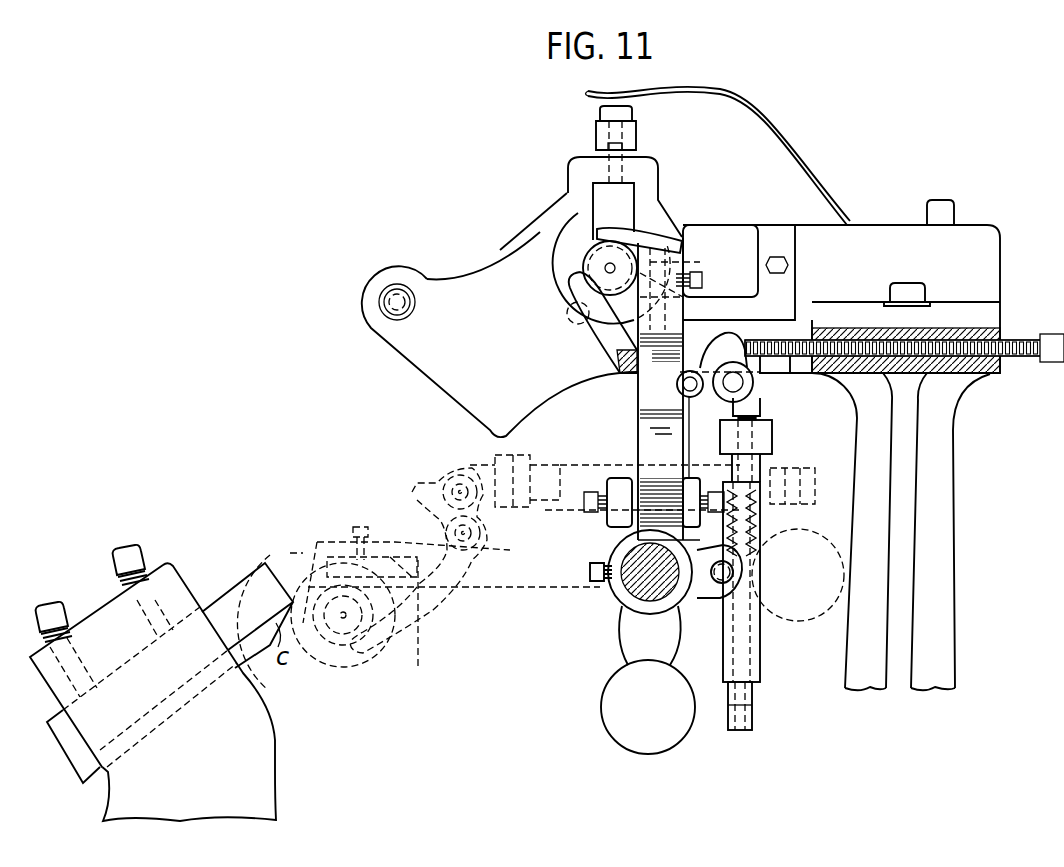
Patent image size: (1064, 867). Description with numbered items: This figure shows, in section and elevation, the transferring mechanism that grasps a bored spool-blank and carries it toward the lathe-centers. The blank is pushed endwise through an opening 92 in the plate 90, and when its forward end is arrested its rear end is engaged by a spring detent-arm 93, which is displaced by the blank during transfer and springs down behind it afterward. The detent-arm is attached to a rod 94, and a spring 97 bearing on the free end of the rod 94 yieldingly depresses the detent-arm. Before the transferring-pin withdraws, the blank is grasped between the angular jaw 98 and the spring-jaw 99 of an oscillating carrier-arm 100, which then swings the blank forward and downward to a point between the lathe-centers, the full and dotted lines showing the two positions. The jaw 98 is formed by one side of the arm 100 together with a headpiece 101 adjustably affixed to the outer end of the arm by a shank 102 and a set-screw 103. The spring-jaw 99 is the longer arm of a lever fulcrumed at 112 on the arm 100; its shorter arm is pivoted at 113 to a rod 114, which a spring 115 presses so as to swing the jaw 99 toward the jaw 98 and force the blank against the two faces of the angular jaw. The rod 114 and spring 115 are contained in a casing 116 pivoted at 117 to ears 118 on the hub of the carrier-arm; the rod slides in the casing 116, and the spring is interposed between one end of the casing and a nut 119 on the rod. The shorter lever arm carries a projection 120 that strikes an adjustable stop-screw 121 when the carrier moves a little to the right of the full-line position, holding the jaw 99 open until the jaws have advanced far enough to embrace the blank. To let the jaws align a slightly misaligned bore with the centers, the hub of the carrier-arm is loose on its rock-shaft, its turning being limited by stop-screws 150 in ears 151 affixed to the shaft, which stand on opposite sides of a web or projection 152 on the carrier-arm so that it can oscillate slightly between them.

The plate 90 is at (478, 282).
The opening 92 is at (560, 258).
The spring detent-arm 93 is at (612, 216).
The rod 94 is at (625, 137).
The spring 97 is at (727, 110).
The angular jaw 98 is at (840, 445).
The spring-jaw 99 is at (603, 334).
The oscillating carrier-arm 100 is at (638, 418).
The headpiece 101 is at (642, 233).
The shank 102 is at (695, 259).
The set-screw 103 is at (702, 280).
The fulcrum 112 is at (690, 395).
The pivot 113 is at (748, 384).
The rod 114 is at (760, 415).
The spring 115 is at (770, 505).
The casing 116 is at (750, 644).
The pivot 117 is at (736, 570).
The ears 118 is at (708, 580).
The nut 119 is at (754, 690).
The projection 120 is at (568, 312).
The adjustable stop-screw 121 is at (792, 342).
The stop-screws 150 is at (606, 490).
The ears 151 is at (592, 492).
The web or projection 152 is at (632, 480).